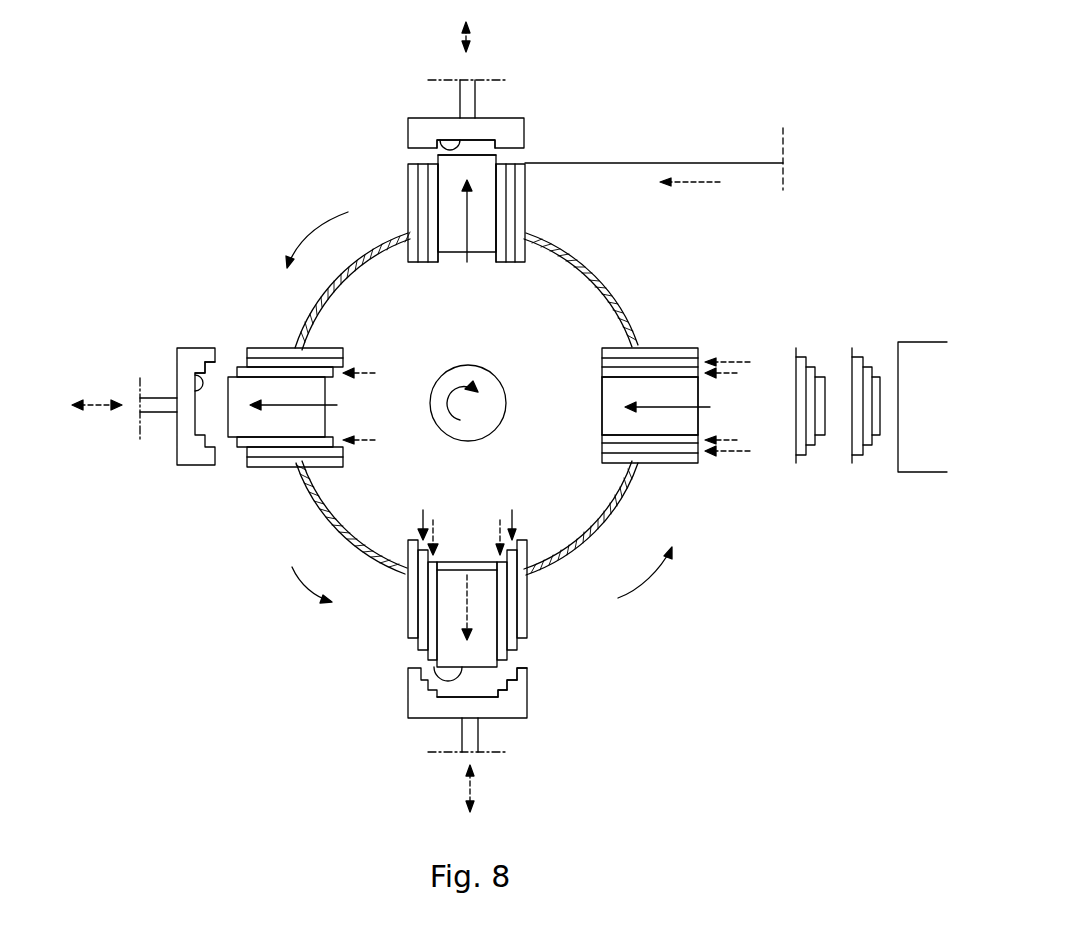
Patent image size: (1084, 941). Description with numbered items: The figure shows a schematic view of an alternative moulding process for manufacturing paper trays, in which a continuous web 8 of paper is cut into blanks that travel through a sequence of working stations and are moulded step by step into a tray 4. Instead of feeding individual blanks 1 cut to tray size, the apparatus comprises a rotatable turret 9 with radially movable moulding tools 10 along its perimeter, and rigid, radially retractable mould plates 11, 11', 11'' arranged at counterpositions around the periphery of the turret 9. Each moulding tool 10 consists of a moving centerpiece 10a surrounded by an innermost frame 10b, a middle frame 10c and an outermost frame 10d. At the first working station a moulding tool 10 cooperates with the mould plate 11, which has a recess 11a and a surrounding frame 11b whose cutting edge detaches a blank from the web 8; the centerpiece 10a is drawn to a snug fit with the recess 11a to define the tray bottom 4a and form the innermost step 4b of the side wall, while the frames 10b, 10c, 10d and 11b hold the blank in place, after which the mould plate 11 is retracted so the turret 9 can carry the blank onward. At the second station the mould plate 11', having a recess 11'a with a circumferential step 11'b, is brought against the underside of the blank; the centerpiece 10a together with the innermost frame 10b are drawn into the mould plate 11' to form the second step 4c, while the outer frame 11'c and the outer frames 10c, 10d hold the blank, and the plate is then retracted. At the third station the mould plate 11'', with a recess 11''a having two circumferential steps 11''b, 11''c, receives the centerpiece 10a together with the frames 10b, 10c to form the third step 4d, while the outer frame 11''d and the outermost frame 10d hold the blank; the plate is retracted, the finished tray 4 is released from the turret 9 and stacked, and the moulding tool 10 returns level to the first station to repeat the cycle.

The blank 1 is at (468, 154).
The tray 4 is at (806, 463).
The bottom 4a is at (880, 390).
The innermost step 4b is at (872, 447).
The second step 4c is at (859, 357).
The third step 4d is at (853, 463).
The continuous web 8 is at (670, 163).
The rotatable turret 9 is at (625, 297).
The moulding tool 10 is at (459, 431).
The centerpiece 10a is at (486, 182).
The innermost frame 10b is at (503, 196).
The middle frame 10c is at (512, 216).
The outermost frame 10d is at (520, 228).
The mould plate 11 is at (461, 88).
The recess 11a is at (441, 146).
The surrounding frame 11b is at (410, 155).
The mould plate 11' is at (129, 382).
The recess 11'a is at (127, 345).
The circumferential step 11'b is at (151, 328).
The outer frame 11'c is at (185, 318).
The mould plate 11'' is at (522, 755).
The recess 11''a is at (515, 770).
The circumferential step 11''b is at (561, 746).
The circumferential step 11''c is at (584, 715).
The outer frame 11''d is at (597, 682).